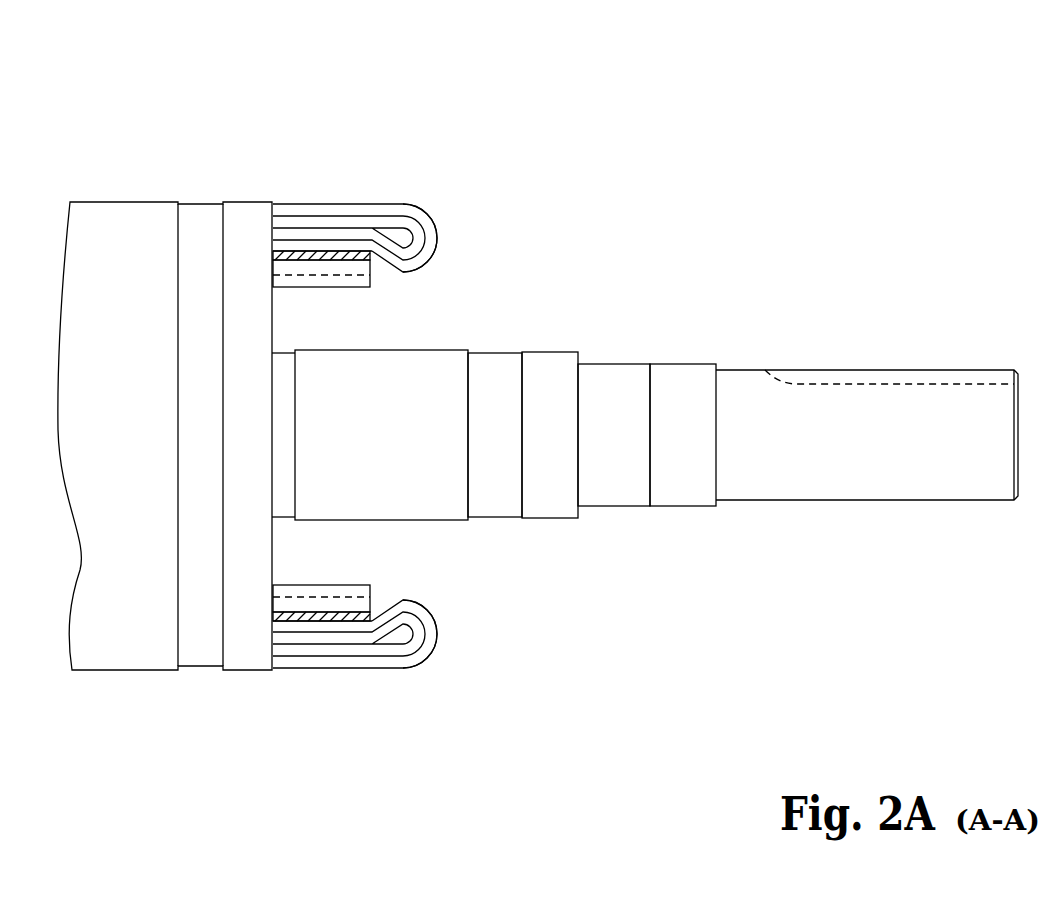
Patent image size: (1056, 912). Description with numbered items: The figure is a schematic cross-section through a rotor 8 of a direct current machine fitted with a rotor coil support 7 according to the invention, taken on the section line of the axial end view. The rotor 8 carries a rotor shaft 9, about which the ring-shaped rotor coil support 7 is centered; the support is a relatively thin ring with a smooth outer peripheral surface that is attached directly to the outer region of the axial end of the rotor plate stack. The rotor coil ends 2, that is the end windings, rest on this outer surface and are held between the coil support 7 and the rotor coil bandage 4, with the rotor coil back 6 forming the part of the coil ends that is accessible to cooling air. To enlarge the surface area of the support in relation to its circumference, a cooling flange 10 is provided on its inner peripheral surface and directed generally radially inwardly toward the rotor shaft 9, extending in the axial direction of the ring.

The rotor coil ends 2 is at (428, 640).
The rotor coil bandage 4 is at (314, 204).
The rotor coil back 6 is at (436, 218).
The rotor coil support 7 is at (313, 632).
The rotor 8 is at (150, 190).
The rotor shaft 9 is at (606, 385).
The cooling flange 10 is at (332, 272).